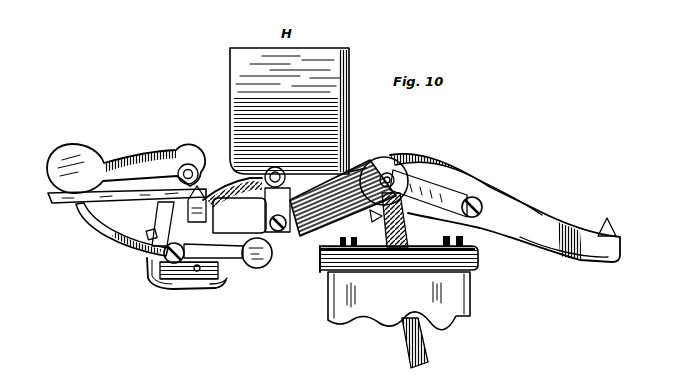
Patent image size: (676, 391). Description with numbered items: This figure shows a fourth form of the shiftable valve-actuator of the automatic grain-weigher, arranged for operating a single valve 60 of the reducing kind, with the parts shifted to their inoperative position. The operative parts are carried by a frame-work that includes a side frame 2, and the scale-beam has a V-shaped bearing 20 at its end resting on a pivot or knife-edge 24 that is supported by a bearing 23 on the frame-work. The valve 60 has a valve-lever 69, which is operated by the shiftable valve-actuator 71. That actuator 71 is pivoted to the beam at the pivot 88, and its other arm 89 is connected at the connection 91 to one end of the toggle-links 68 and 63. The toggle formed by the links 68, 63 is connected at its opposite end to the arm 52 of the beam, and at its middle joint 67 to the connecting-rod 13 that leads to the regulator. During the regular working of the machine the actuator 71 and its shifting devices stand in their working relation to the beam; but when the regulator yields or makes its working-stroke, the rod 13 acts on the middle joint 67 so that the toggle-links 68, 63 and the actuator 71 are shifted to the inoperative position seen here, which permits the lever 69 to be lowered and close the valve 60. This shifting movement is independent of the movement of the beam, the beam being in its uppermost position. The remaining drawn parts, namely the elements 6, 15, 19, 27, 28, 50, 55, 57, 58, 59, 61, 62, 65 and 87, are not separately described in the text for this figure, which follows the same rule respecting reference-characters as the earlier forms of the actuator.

The side frame 2 is at (459, 293).
The base plate 6 is at (478, 251).
The connecting-rod 13 is at (424, 344).
The wedge 15 is at (198, 188).
The block 19 is at (239, 215).
The V-shaped bearing 20 is at (404, 222).
The bearing 23 is at (389, 253).
The pivot or knife-edge 24 is at (357, 248).
The point 27 is at (611, 221).
The lever end 28 is at (562, 221).
The pivot disc 50 is at (381, 160).
The arm of the beam 52 is at (441, 162).
The hole 55 is at (197, 273).
The screw 57 is at (134, 252).
The curved arm 58 is at (94, 232).
The bar 59 is at (150, 233).
The valve 60 is at (217, 288).
The pivot 61 is at (189, 163).
The bracket 62 is at (150, 268).
The toggle-link 63 is at (429, 200).
The bracket plate 65 is at (182, 284).
The middle joint 67 is at (391, 176).
The toggle-link 68 is at (334, 192).
The valve-lever 69 is at (121, 160).
The shiftable valve-actuator 71 is at (121, 206).
The screw 87 is at (475, 219).
The pivot 88 is at (275, 166).
The arm of the actuator 89 is at (277, 210).
The connection 91 is at (286, 232).